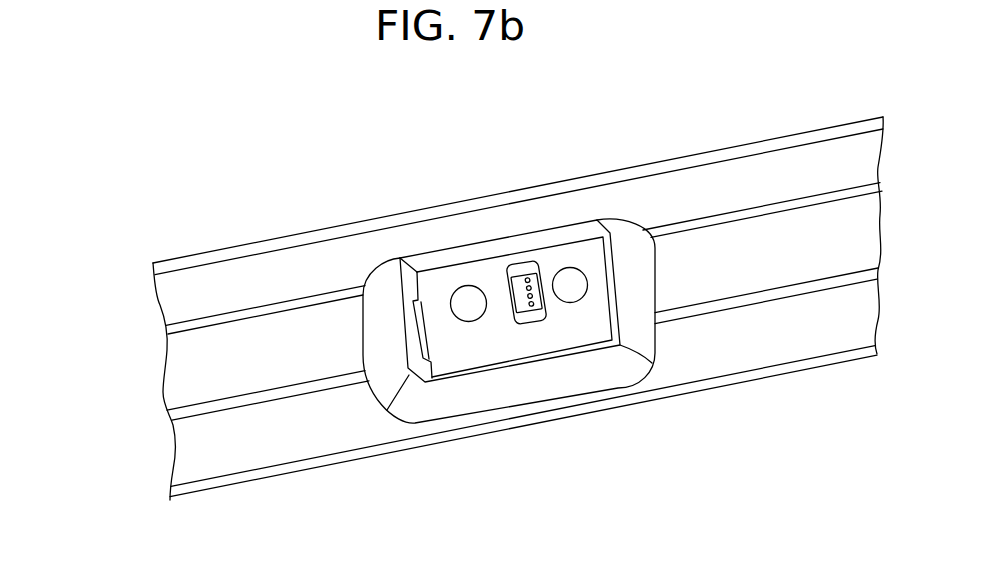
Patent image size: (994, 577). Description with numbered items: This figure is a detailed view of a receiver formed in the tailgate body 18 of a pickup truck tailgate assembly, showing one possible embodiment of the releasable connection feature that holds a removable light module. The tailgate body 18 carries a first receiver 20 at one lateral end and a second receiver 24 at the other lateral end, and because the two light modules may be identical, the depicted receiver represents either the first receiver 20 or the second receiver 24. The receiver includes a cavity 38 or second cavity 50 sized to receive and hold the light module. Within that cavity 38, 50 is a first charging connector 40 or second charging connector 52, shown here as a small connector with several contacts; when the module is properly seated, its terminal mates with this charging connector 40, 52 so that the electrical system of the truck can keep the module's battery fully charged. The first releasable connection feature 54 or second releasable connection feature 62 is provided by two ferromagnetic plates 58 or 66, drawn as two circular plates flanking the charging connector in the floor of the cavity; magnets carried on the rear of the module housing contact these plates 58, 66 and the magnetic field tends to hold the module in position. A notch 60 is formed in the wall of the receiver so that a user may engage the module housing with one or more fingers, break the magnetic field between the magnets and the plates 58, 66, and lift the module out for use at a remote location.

The tailgate body 18 is at (165, 383).
The first receiver 20 is at (583, 313).
The second receiver 24 is at (583, 313).
The cavity 38 is at (538, 365).
The second cavity 50 is at (483, 338).
The first charging connector 40 is at (614, 213).
The second charging connector 52 is at (525, 272).
The first releasable connection feature 54 is at (639, 316).
The second releasable connection feature 62 is at (600, 297).
The ferromagnetic plates 58 is at (543, 396).
The ferromagnetic plates 66 is at (467, 310).
The notch 60 is at (412, 325).